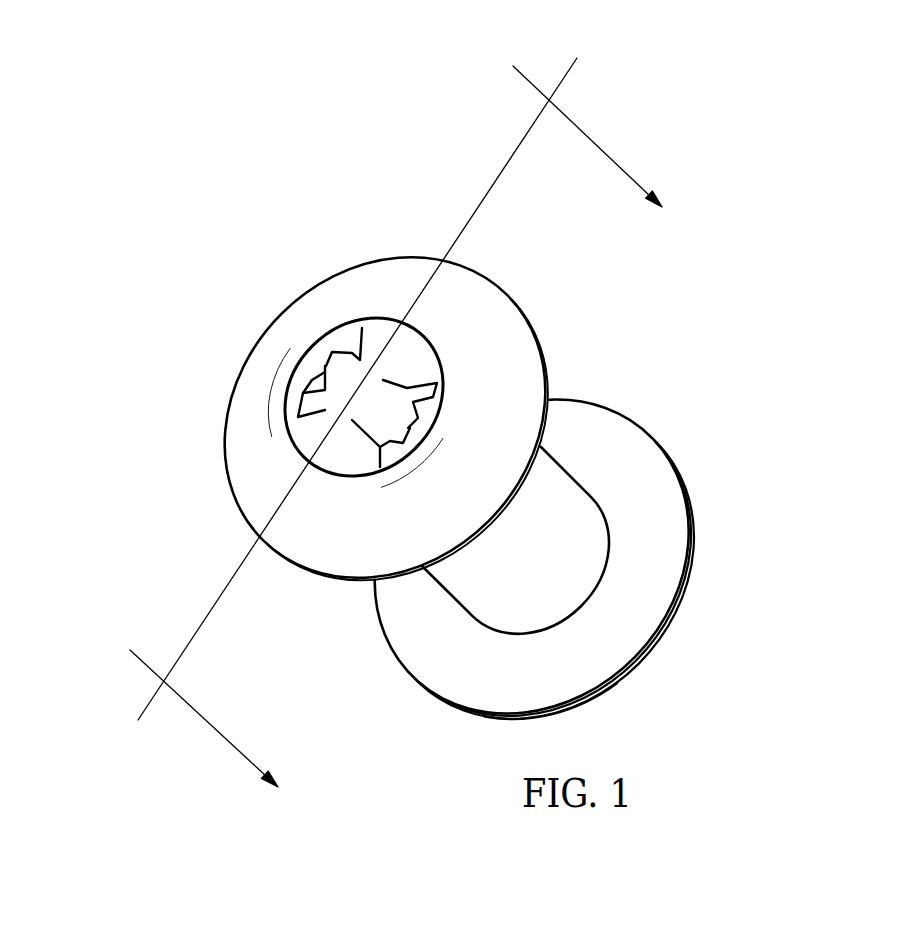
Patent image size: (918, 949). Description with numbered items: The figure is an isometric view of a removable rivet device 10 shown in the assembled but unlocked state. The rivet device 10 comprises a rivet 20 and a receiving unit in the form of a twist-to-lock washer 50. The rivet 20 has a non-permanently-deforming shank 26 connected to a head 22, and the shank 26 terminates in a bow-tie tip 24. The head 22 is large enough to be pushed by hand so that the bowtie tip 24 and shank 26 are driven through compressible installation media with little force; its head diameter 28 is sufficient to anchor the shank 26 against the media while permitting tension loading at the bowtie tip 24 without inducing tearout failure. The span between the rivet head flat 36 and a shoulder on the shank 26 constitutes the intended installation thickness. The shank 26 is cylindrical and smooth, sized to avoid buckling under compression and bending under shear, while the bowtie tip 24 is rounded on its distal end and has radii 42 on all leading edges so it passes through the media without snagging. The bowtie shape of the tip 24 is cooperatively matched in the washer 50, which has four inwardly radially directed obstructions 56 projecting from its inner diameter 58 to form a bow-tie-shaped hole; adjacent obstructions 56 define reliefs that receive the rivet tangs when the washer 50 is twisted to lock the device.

The rivet device 10 is at (323, 635).
The rivet 20 is at (481, 726).
The head 22 is at (627, 680).
The bow-tie tip 24 is at (415, 325).
The shank 26 is at (568, 551).
The head diameter 28 is at (693, 562).
The rivet head flat 36 is at (640, 603).
The radii 42 is at (445, 355).
The twist-to-lock washer 50 is at (224, 465).
The obstructions 56 is at (318, 322).
The inner diameter 58 is at (292, 342).